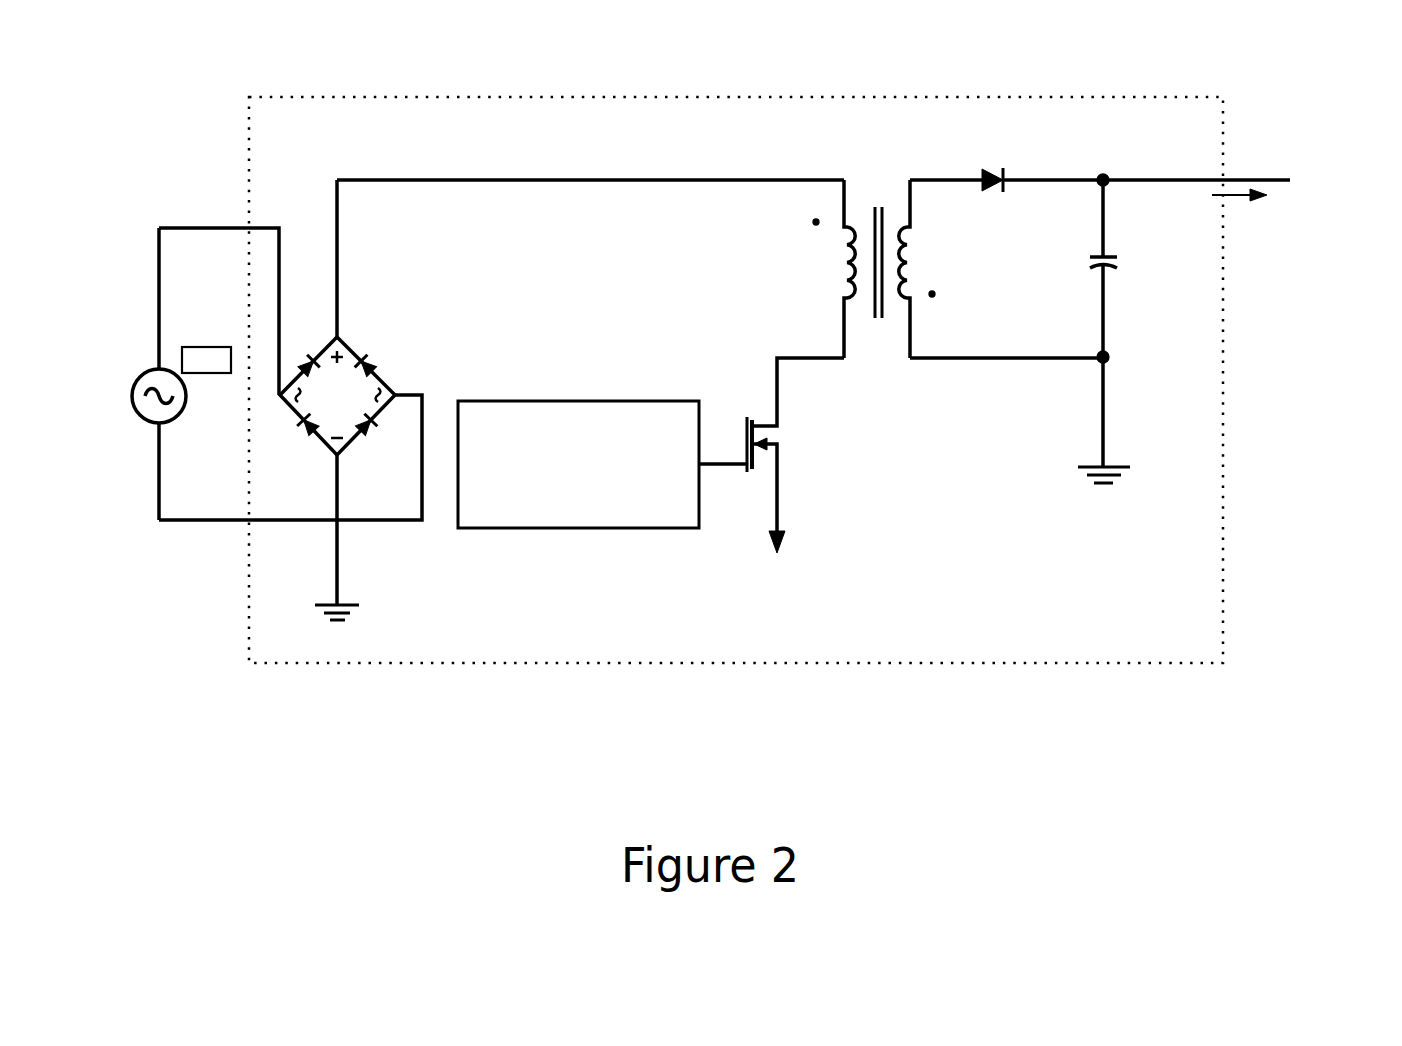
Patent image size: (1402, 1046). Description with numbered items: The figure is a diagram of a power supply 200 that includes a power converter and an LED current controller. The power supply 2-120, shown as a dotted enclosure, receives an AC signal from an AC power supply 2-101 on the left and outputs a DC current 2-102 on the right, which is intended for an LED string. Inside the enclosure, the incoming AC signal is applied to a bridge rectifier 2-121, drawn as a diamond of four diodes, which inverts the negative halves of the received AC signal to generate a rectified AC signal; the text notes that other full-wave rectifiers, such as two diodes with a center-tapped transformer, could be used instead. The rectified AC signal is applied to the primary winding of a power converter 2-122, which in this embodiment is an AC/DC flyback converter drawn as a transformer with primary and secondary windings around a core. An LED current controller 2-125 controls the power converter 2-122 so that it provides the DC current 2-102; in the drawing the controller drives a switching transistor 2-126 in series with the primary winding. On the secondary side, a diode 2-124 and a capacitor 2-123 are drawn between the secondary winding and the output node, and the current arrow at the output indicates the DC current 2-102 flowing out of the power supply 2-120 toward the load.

The power supply 200 is at (146, 66).
The AC power supply 2-101 is at (130, 388).
The DC current 2-102 is at (1240, 196).
The power supply 2-120 is at (297, 97).
The bridge rectifier 2-121 is at (372, 367).
The power converter 2-122 is at (874, 249).
The output capacitor C 2-123 is at (1117, 262).
The output diode 2-124 is at (988, 168).
The LED current controller 2-125 is at (578, 528).
The switching transistor 2-126 is at (777, 455).